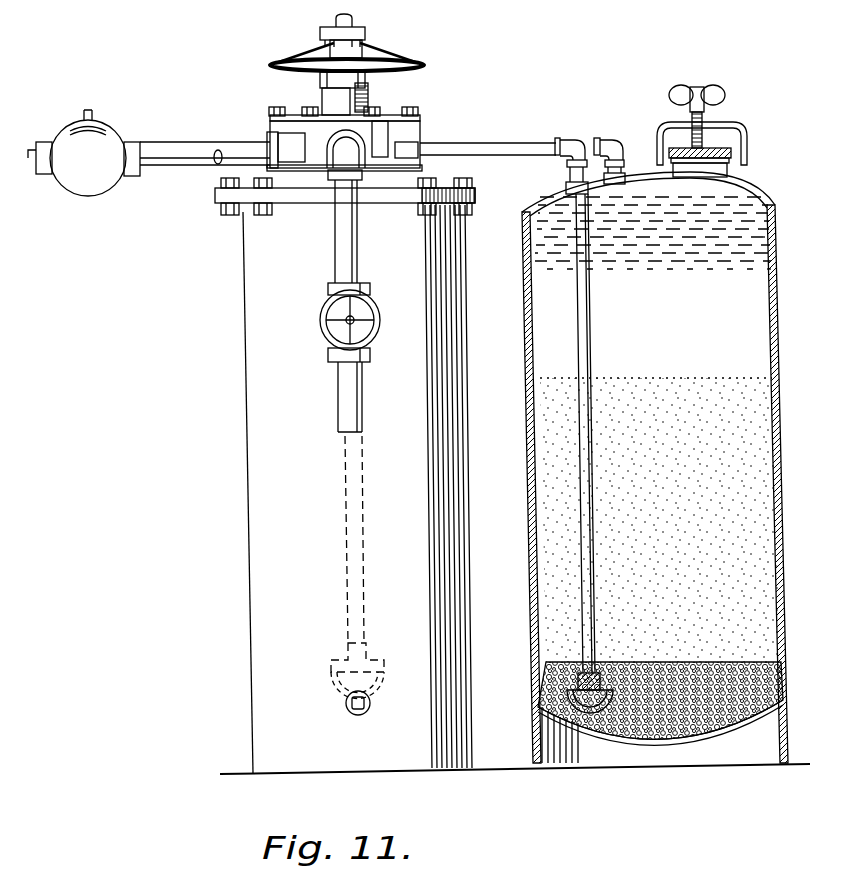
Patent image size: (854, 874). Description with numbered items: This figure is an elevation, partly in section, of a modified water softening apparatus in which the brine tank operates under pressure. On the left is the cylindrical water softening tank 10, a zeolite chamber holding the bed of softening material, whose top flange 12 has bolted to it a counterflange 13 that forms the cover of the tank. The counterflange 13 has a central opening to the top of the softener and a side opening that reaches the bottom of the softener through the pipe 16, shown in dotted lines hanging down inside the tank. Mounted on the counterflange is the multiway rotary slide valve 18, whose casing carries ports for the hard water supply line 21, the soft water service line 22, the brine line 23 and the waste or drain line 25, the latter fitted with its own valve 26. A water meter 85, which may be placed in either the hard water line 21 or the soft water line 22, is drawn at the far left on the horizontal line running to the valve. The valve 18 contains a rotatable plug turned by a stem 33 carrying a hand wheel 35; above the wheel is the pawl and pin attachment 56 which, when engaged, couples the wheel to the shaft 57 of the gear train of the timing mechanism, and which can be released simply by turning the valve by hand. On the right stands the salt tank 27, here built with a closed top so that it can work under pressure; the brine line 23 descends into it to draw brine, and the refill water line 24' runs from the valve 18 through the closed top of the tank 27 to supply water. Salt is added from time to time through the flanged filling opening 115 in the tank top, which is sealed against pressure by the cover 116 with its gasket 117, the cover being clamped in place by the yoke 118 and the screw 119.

The water softening tank 10 is at (357, 489).
The top flange 12 is at (466, 204).
The counterflange 13 is at (472, 190).
The pipe 16 is at (364, 515).
The multiway rotary slide valve 18 is at (420, 131).
The hard water supply line 21 is at (218, 163).
The soft water service line 22 is at (183, 142).
The brine line 23 is at (520, 156).
The refill water line 24' is at (605, 152).
The waste or drain line 25 is at (358, 240).
The valve 26 is at (380, 328).
The salt tank 27 is at (779, 400).
The stem 33 is at (366, 77).
The hand wheel 35 is at (410, 58).
The pawl and pin attachment 56 is at (366, 33).
The shaft 57 is at (353, 19).
The water meter 85 is at (102, 190).
The flanged filling opening 115 is at (728, 170).
The cover 116 is at (731, 150).
The gasket 117 is at (730, 160).
The yoke 118 is at (730, 125).
The screw 119 is at (718, 98).